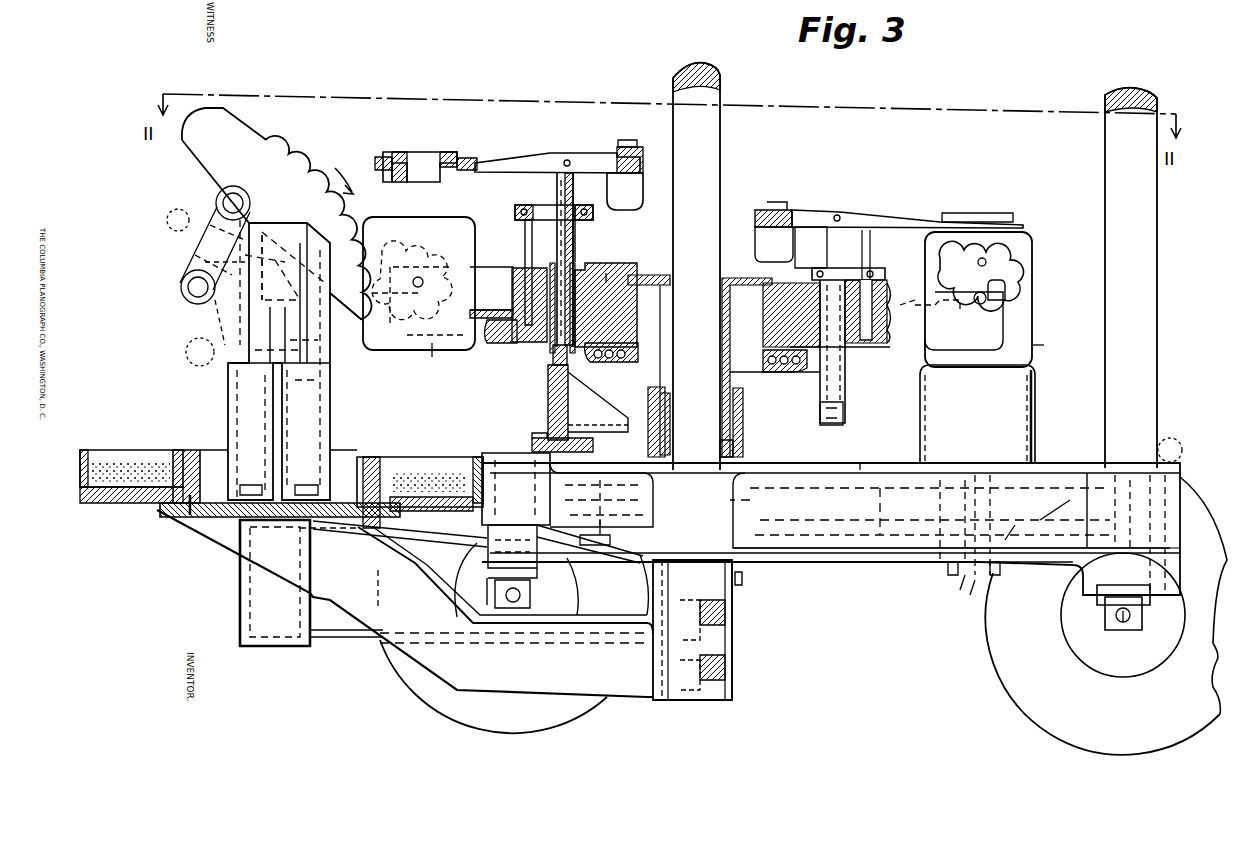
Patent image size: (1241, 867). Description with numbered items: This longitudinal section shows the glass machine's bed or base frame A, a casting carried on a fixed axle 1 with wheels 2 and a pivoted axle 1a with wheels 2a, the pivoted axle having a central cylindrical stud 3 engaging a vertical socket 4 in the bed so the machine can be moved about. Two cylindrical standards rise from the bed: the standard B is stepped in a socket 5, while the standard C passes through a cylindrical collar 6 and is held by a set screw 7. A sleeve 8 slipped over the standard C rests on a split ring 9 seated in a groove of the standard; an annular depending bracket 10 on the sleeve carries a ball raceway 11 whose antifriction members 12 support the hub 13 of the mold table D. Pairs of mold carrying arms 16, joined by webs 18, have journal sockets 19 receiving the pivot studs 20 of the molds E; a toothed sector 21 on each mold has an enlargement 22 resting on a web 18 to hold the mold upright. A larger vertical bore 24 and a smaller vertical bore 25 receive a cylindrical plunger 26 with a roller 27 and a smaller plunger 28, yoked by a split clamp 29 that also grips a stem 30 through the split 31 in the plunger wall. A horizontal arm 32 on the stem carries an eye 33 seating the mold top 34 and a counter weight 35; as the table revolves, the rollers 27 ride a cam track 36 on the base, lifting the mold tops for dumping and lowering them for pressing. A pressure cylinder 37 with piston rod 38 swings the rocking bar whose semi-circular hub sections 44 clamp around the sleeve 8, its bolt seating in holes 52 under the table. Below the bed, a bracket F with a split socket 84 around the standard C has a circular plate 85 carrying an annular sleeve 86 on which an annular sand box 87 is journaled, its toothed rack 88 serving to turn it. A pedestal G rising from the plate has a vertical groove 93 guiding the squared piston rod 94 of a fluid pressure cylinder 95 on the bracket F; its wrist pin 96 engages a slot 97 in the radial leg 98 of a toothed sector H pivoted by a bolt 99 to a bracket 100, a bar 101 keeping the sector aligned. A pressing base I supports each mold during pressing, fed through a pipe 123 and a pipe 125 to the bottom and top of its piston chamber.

The fixed axle 1 is at (1123, 623).
The pivoted axle 1a is at (548, 585).
The wheels 2 is at (1106, 616).
The wheels 2a is at (514, 638).
The cylindrical stud 3 is at (485, 527).
The vertical socket 4 is at (512, 458).
The socket 5 is at (1152, 468).
The cylindrical collar 6 is at (733, 592).
The set screw 7 is at (745, 580).
The sleeve 8 is at (738, 388).
The split ring 9 is at (748, 448).
The annular depending bracket 10 is at (648, 284).
The annular ball raceway 11 is at (605, 363).
The antifriction members 12 is at (793, 372).
The hub 13 is at (806, 262).
The mold carrying arms 16 is at (880, 312).
The webs 18 is at (517, 305).
The journal sockets 19 is at (1000, 290).
The pivot studs 20 is at (998, 307).
The toothed sector 21 is at (966, 299).
The enlargements 22 is at (492, 298).
The larger vertical bore 24 is at (571, 268).
The smaller vertical bore 25 is at (482, 345).
The cylindrical plunger 26 is at (583, 244).
The roller 27 is at (552, 370).
The smaller plunger 28 is at (526, 247).
The split clamp 29 is at (540, 208).
The stem 30 is at (616, 190).
The split 31 is at (530, 222).
The horizontal arm 32 is at (548, 160).
The eye 33 is at (466, 158).
The mold top 34 is at (415, 155).
The counter weight 35 is at (891, 232).
The cam track 36 is at (580, 408).
The pressure cylinder 37 is at (942, 601).
The piston rod 38 is at (847, 570).
The semi-circular hub sections 44 is at (744, 420).
The holes 52 is at (843, 358).
The split socket 84 is at (731, 658).
The horizontal circular plate 85 is at (192, 510).
The annular plate or sleeve 86 is at (360, 455).
The annular sand box 87 is at (137, 450).
The toothed rack 88 is at (123, 505).
The vertical groove 93 is at (332, 345).
The piston rod 94 is at (200, 352).
The fluid pressure cylinder 95 is at (248, 592).
The wrist pin 96 is at (215, 228).
The slot 97 is at (205, 238).
The radial leg 98 is at (205, 264).
The bolt 99 is at (183, 293).
The bracket 100 is at (225, 335).
The bar 101 is at (216, 200).
The pipe 123 is at (1034, 578).
The pipe 125 is at (946, 570).
The bed or base frame A is at (831, 518).
The vertical standard B is at (1131, 278).
The vertical standard C is at (696, 266).
The mold table D is at (606, 300).
The molds E is at (738, 359).
The bracket F is at (405, 603).
The pedestal G is at (279, 361).
The toothed sector H is at (277, 213).
The pressing base I is at (977, 414).